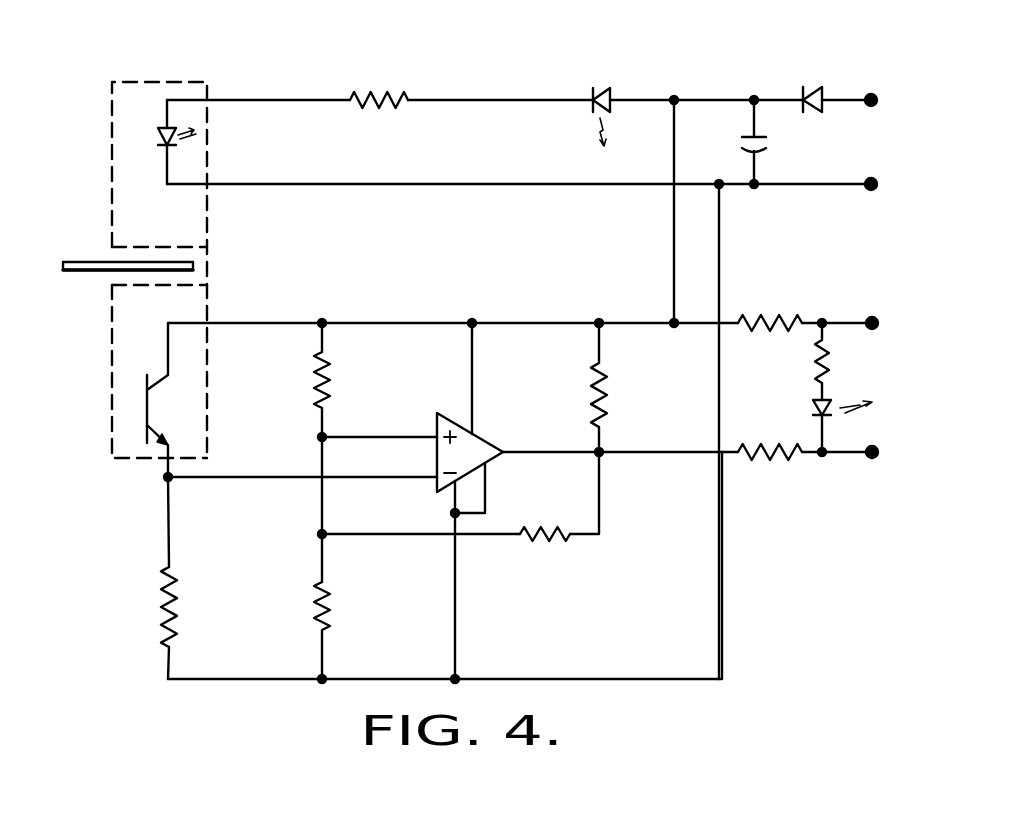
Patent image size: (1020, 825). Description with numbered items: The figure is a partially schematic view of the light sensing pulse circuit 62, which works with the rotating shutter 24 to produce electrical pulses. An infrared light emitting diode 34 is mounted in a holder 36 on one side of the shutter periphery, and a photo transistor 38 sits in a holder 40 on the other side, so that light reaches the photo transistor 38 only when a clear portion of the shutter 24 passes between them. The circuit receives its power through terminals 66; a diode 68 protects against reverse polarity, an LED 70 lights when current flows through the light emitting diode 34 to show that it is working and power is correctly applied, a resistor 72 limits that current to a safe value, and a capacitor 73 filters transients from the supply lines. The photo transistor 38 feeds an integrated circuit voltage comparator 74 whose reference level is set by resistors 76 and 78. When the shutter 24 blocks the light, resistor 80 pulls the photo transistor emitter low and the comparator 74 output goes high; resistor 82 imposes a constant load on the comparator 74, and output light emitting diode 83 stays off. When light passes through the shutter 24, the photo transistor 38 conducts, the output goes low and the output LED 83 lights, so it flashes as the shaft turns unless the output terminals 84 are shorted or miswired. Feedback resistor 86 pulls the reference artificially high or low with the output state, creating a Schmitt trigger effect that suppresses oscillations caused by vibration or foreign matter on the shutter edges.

The shutter 24 is at (88, 262).
The light emitting diode 34 is at (157, 138).
The holder 36 is at (143, 82).
The photo transistor 38 is at (147, 405).
The holder 40 is at (130, 462).
The pulse circuit 62 is at (740, 537).
The terminals 66 is at (876, 104).
The diode 68 is at (812, 87).
The LED 70 is at (600, 88).
The resistor 72 is at (383, 108).
The capacitor 73 is at (766, 139).
The integrated circuit voltage comparator 74 is at (475, 440).
The resistor 76 is at (318, 384).
The resistor 78 is at (333, 592).
The resistor 80 is at (186, 578).
The resistor 82 is at (596, 385).
The output light emitting diode 83 is at (810, 410).
The output terminals 84 is at (878, 326).
The feedback resistor 86 is at (525, 532).